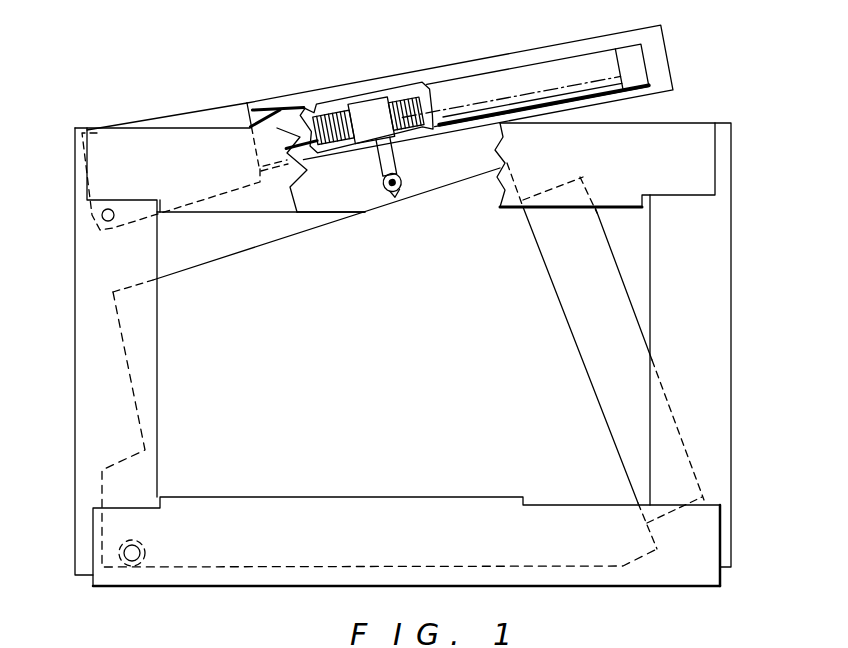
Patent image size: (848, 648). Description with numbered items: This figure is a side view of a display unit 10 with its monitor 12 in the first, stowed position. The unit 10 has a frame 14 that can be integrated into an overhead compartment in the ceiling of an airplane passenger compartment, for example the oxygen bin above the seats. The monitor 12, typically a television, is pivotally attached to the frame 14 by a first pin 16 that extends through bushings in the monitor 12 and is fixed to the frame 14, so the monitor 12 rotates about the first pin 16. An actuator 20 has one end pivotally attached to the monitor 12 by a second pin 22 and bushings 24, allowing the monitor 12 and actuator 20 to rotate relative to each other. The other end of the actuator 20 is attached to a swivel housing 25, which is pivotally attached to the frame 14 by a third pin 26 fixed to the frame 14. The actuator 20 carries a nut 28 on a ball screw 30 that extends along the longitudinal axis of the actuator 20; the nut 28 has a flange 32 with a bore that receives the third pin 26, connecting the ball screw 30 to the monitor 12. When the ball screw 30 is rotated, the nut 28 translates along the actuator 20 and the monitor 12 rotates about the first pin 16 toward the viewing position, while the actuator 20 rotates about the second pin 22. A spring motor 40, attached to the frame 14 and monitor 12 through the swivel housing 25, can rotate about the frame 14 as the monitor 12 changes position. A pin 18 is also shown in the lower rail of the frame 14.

The display unit 10 is at (722, 100).
The monitor 12 is at (620, 335).
The frame 14 is at (703, 162).
The first pin 16 is at (122, 549).
The pivot pin 18 is at (140, 545).
The actuator 20 is at (664, 36).
The second pin 22 is at (397, 198).
The bushings 24 is at (400, 185).
The swivel housing 25 is at (203, 117).
The third pin 26 is at (102, 215).
The nut 28 is at (363, 110).
The ball screw 30 is at (327, 103).
The flange 32 is at (368, 167).
The spring motor 40 is at (468, 87).